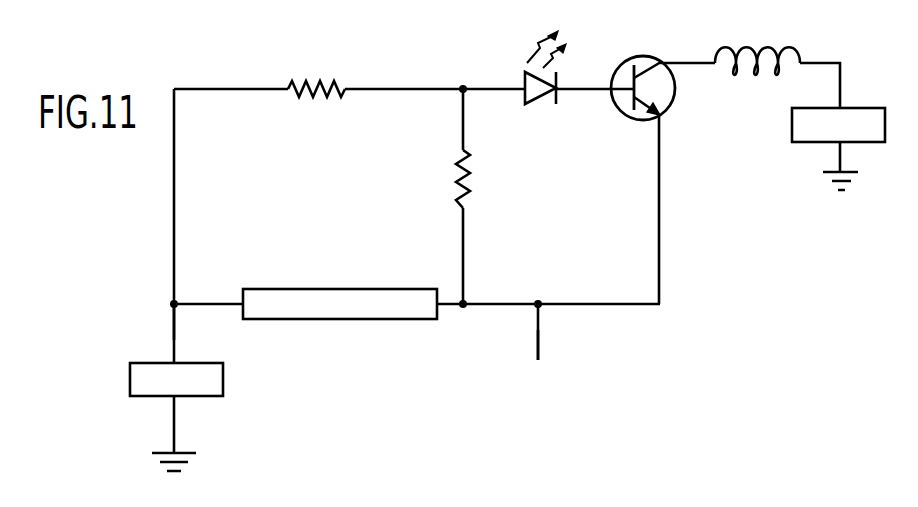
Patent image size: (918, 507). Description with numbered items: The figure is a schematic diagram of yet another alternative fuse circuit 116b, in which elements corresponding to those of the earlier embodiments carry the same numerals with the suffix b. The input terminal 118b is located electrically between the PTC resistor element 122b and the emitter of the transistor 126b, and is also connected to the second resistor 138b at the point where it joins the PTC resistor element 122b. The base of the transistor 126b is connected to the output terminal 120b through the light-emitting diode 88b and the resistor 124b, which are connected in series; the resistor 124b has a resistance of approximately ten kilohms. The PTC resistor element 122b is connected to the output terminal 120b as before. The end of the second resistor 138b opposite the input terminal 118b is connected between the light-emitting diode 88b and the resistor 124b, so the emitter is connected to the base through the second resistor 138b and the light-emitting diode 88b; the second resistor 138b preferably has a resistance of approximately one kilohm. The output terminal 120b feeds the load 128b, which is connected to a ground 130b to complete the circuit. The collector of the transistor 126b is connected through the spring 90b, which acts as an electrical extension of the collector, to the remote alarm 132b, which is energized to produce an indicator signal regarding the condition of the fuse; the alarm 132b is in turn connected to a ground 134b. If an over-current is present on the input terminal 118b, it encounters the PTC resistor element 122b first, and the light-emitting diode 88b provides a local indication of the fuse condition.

The fuse circuit 116b is at (160, 261).
The input terminal 118b is at (540, 330).
The output terminal 120b is at (172, 337).
The PTC resistor element 122b is at (358, 319).
The resistor 124b is at (300, 86).
The transistor 126b is at (634, 57).
The load 128b is at (130, 383).
The ground 130b is at (152, 455).
The alarm 132b is at (792, 121).
The ground 134b is at (829, 178).
The second resistor 138b is at (460, 190).
The light-emitting diode 88b is at (547, 100).
The spring 90b is at (753, 25).